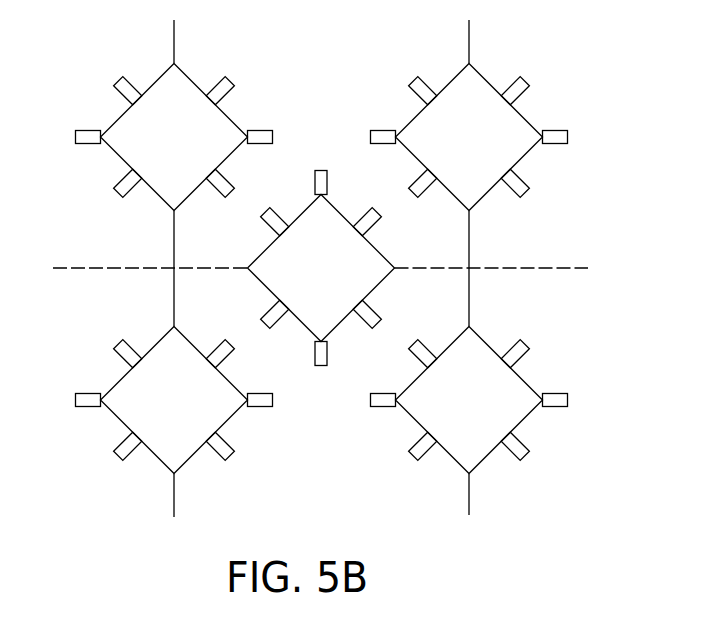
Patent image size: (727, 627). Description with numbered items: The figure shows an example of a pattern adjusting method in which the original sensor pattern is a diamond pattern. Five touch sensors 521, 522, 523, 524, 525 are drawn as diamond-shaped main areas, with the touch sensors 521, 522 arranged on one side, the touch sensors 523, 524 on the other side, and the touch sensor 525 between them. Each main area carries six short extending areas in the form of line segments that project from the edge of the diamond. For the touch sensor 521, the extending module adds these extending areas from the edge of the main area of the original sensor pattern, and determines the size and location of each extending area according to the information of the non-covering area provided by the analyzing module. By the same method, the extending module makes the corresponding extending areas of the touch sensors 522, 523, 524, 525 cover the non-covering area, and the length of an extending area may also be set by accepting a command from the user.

The touch sensor 521 is at (490, 135).
The touch sensor 522 is at (487, 462).
The touch sensor 523 is at (158, 75).
The touch sensor 524 is at (155, 342).
The touch sensor 525 is at (301, 324).